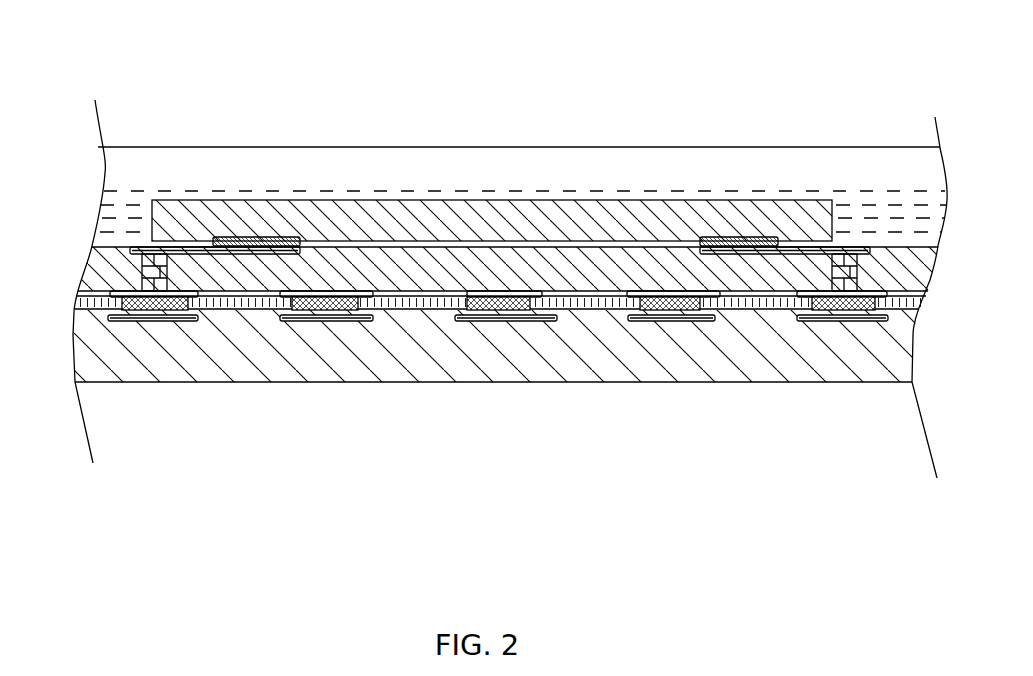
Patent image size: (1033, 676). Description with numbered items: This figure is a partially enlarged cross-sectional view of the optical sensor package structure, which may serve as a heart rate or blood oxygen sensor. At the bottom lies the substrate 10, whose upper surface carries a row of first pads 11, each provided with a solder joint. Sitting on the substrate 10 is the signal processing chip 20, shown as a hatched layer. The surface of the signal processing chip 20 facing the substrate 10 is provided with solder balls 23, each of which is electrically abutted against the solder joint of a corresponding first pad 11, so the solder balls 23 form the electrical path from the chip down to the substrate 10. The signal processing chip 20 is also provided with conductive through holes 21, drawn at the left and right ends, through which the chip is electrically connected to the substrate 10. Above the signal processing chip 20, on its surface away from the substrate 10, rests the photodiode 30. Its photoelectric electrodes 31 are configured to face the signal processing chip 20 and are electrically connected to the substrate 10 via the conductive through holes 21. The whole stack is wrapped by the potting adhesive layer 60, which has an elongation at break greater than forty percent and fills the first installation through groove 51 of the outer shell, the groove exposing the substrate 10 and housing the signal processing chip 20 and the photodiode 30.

The substrate 10 is at (537, 383).
The first pad 11 is at (170, 323).
The signal processing chip 20 is at (568, 262).
The conductive through hole 21 is at (155, 252).
The solder ball 23 is at (148, 310).
The photodiode 30 is at (445, 216).
The photoelectric electrode 31 is at (259, 238).
The first installation through groove 51 is at (352, 160).
The potting adhesive layer 60 is at (117, 197).